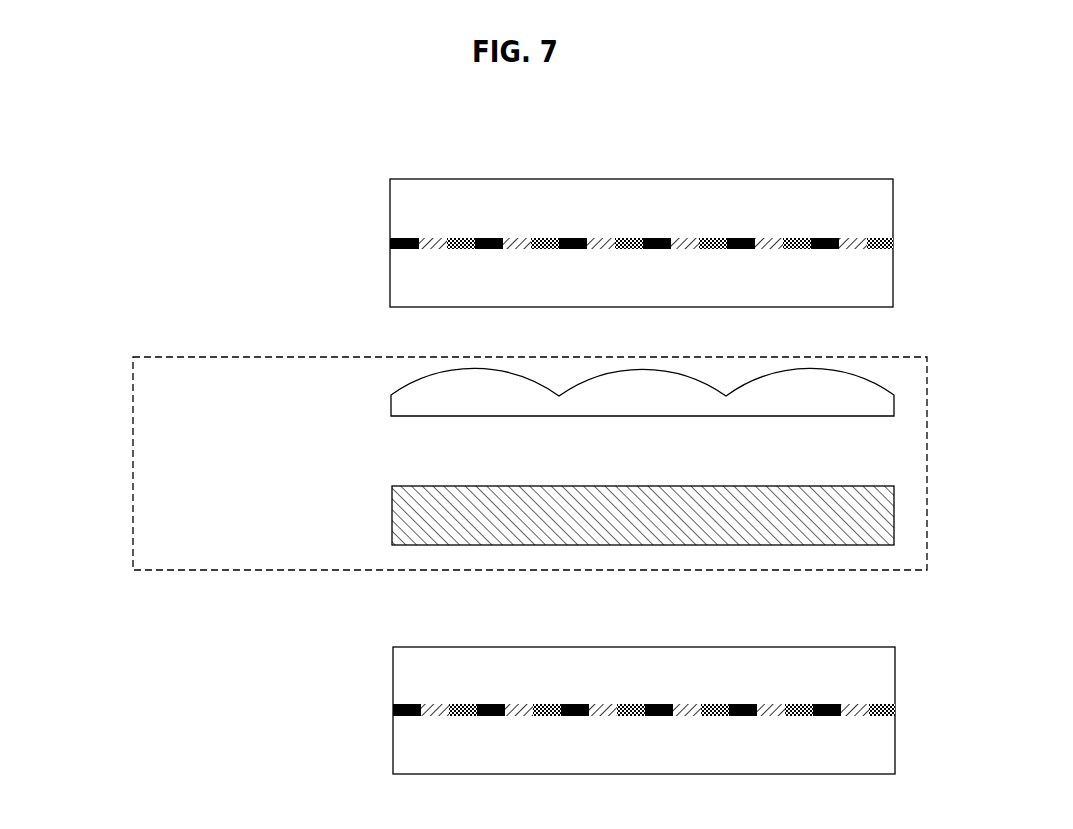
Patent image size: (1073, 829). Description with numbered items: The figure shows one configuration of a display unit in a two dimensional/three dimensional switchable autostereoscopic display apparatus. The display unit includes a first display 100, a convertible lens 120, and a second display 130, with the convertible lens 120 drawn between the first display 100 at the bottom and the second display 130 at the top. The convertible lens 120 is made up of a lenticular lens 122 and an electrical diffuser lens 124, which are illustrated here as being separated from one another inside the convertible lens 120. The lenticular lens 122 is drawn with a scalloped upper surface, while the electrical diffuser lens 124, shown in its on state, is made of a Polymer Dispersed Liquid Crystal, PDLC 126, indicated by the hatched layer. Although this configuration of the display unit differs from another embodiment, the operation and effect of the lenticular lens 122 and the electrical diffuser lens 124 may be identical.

The second display 130 is at (572, 243).
The convertible lens 120 is at (927, 452).
The lenticular lens 122 is at (413, 400).
The electrical diffuser lens 124 is at (534, 530).
The Polymer Dispersed Liquid Crystal (PDLC) 126 is at (630, 524).
The first display 100 is at (576, 710).